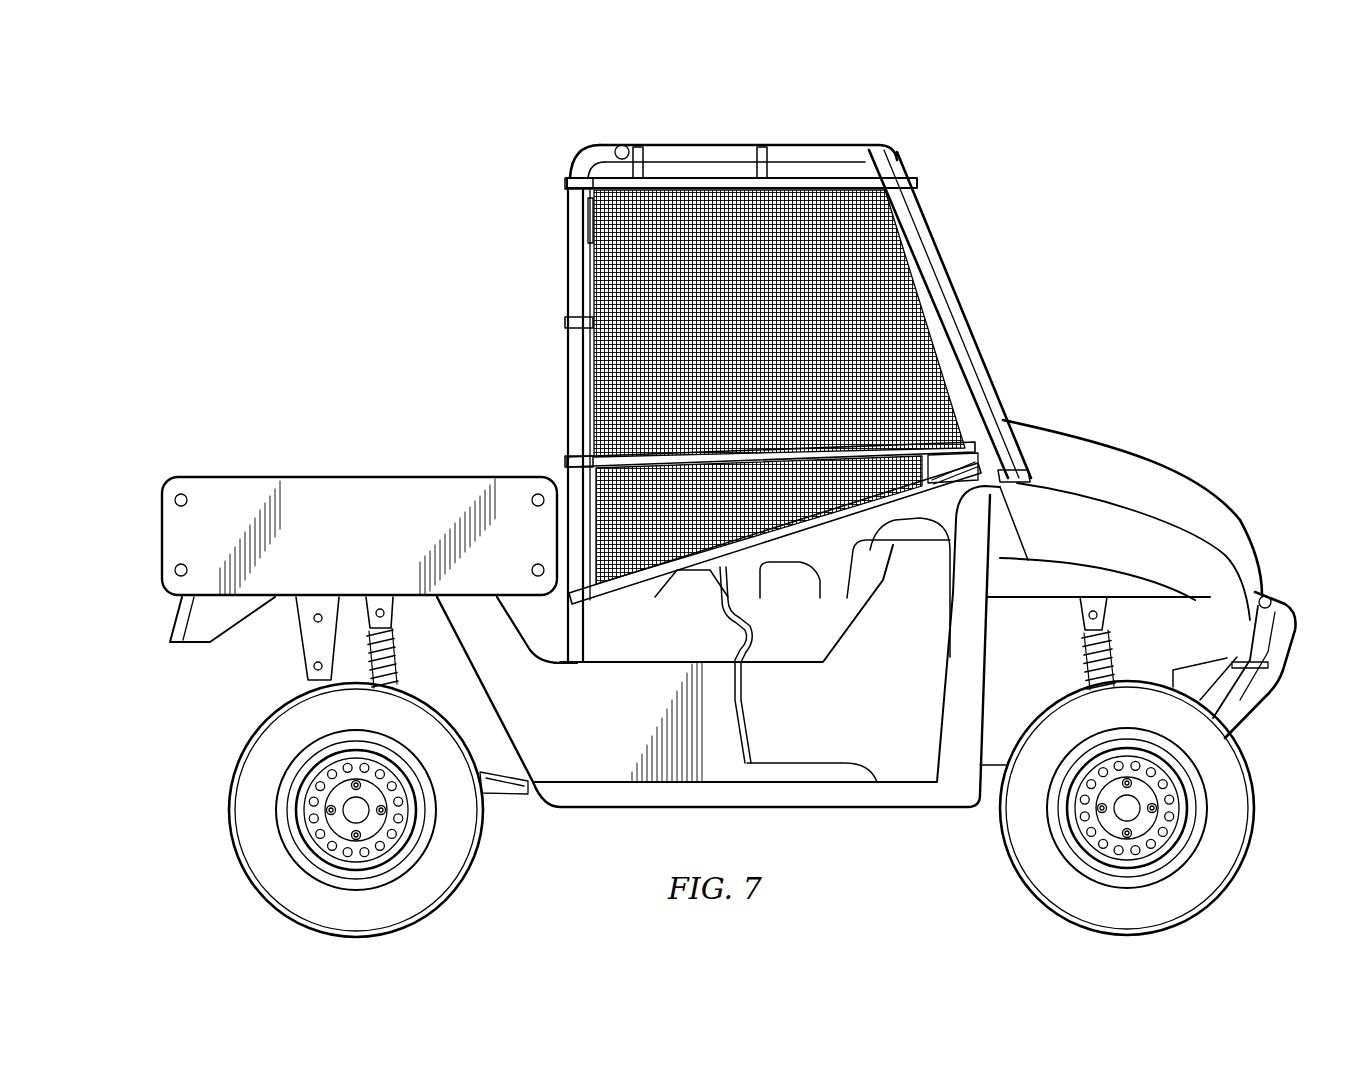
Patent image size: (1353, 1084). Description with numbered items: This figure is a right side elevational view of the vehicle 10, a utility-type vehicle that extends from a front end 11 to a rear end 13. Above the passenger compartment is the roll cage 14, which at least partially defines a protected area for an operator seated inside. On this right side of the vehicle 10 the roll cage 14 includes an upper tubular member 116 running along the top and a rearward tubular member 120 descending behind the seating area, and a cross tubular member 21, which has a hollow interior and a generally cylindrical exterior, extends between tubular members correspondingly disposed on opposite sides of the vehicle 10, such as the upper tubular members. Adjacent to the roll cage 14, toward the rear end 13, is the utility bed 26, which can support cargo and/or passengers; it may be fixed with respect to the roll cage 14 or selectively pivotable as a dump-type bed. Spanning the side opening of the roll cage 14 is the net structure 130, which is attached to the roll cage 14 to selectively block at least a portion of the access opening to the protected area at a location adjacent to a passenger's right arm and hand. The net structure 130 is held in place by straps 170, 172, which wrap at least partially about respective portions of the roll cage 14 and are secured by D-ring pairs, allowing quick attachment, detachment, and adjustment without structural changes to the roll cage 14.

The vehicle 10 is at (1194, 251).
The front end 11 is at (1288, 537).
The rear end 13 is at (129, 512).
The roll cage 14 is at (979, 206).
The cross tubular member 21 is at (608, 142).
The utility bed 26 is at (355, 432).
The upper tubular member 116 is at (722, 145).
The rearward tubular member 120 is at (568, 296).
The net structure 130 is at (817, 166).
The strap 170 is at (640, 147).
The strap 172 is at (568, 182).